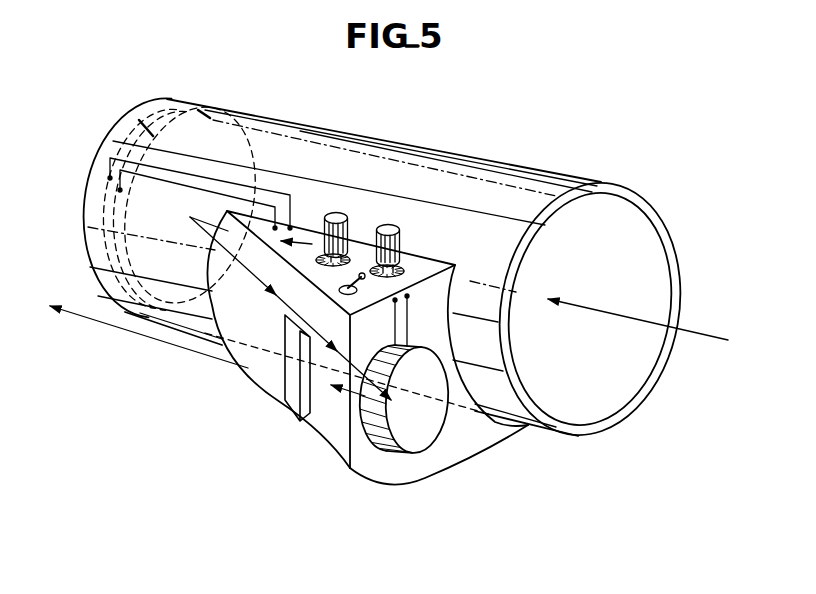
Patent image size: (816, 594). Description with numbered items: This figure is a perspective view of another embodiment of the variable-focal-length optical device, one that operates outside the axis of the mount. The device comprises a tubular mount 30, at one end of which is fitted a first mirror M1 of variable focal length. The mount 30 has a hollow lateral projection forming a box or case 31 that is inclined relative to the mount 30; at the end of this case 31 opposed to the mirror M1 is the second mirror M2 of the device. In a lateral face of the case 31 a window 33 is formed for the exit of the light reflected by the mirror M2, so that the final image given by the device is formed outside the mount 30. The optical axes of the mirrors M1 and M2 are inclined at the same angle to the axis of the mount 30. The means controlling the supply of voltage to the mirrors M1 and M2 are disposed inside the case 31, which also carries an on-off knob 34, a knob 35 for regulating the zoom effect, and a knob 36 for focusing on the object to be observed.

The mount 30 is at (651, 206).
The case 31 is at (452, 443).
The window 33 is at (292, 388).
The on-off knob 34 is at (364, 279).
The zoom regulating knob 35 is at (334, 213).
The focusing knob 36 is at (394, 225).
The first mirror M1 is at (140, 120).
The second mirror M2 is at (398, 437).